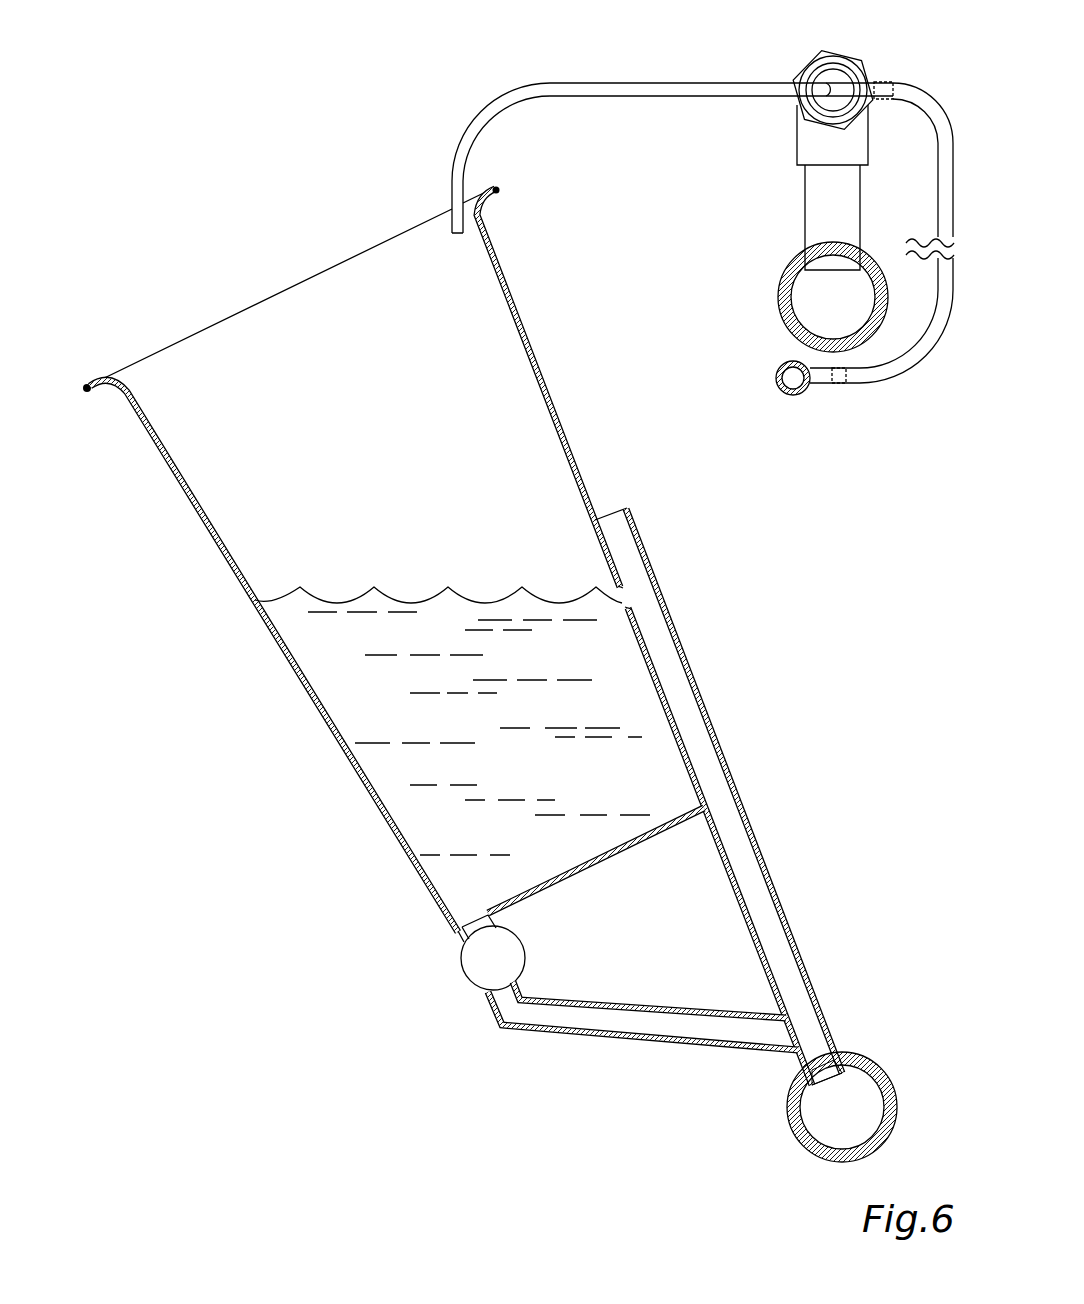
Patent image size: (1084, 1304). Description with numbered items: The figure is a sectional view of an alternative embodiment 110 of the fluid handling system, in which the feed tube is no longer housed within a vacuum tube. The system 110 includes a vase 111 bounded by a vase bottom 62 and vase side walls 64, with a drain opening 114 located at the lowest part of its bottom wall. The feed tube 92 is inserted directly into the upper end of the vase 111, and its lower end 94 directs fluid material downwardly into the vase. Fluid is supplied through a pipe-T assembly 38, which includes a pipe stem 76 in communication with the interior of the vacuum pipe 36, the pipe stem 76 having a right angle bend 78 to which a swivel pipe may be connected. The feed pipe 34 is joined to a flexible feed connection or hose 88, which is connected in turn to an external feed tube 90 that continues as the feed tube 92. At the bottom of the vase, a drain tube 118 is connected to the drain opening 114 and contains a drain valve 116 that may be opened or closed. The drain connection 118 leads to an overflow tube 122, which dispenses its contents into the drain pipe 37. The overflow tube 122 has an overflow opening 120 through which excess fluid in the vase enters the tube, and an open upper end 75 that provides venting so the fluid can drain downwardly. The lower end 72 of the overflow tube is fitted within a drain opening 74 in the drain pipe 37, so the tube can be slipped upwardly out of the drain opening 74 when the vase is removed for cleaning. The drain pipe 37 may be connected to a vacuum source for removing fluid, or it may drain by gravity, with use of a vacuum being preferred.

The alternative embodiment 110 is at (210, 201).
The vase 111 is at (190, 334).
The vase side walls 64 is at (322, 718).
The open upper end 75 is at (610, 514).
The overflow tube 122 is at (646, 550).
The overflow opening 120 is at (632, 601).
The lower end 72 is at (836, 1048).
The drain opening 74 is at (820, 1078).
The vase bottom 62 is at (565, 880).
The drain opening 114 is at (481, 916).
The drain valve 116 is at (472, 961).
The drain tube 118 is at (622, 1047).
The drain pipe 37 is at (897, 1098).
The feed tube 92 is at (636, 98).
The lower end 94 is at (456, 236).
The pipe-T assembly 38 is at (858, 45).
The external feed tube 90 is at (862, 86).
The right angle bend 78 is at (802, 137).
The pipe stem 76 is at (812, 194).
The vacuum pipe 36 is at (784, 290).
The feed pipe 34 is at (780, 375).
The flexible feed connection or hose 88 is at (891, 363).